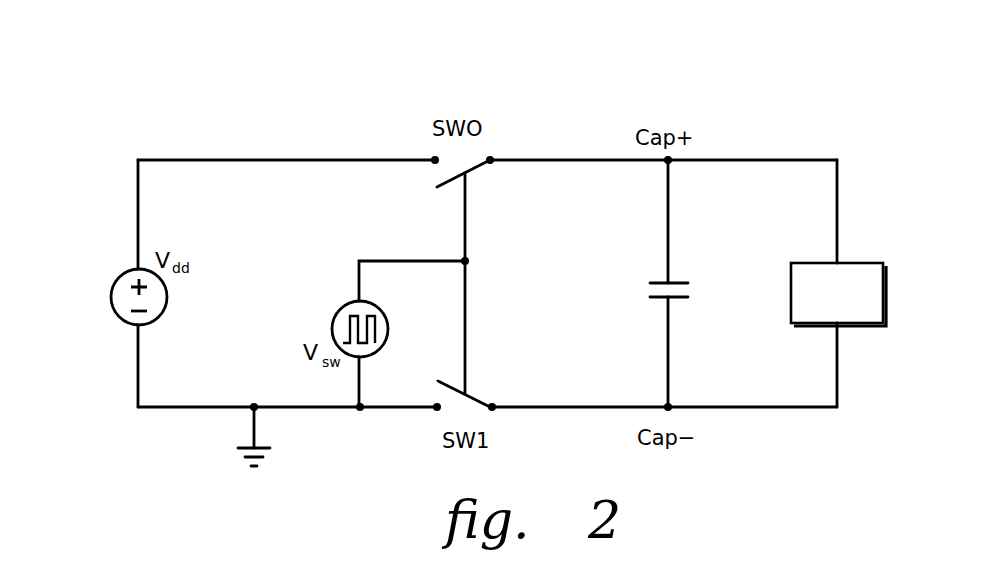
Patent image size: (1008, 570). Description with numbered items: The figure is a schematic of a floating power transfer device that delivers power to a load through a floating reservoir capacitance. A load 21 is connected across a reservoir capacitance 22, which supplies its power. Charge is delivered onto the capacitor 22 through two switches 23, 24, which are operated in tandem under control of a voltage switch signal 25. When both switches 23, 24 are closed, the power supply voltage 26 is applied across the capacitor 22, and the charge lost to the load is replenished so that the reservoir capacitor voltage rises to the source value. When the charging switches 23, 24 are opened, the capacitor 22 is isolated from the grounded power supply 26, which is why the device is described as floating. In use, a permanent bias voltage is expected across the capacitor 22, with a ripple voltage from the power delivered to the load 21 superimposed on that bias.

The load 21 is at (862, 262).
The reservoir capacitance 22 is at (696, 264).
The switch 23 is at (423, 432).
The switch 24 is at (418, 140).
The voltage switch signal 25 is at (320, 292).
The power supply voltage 26 is at (103, 328).